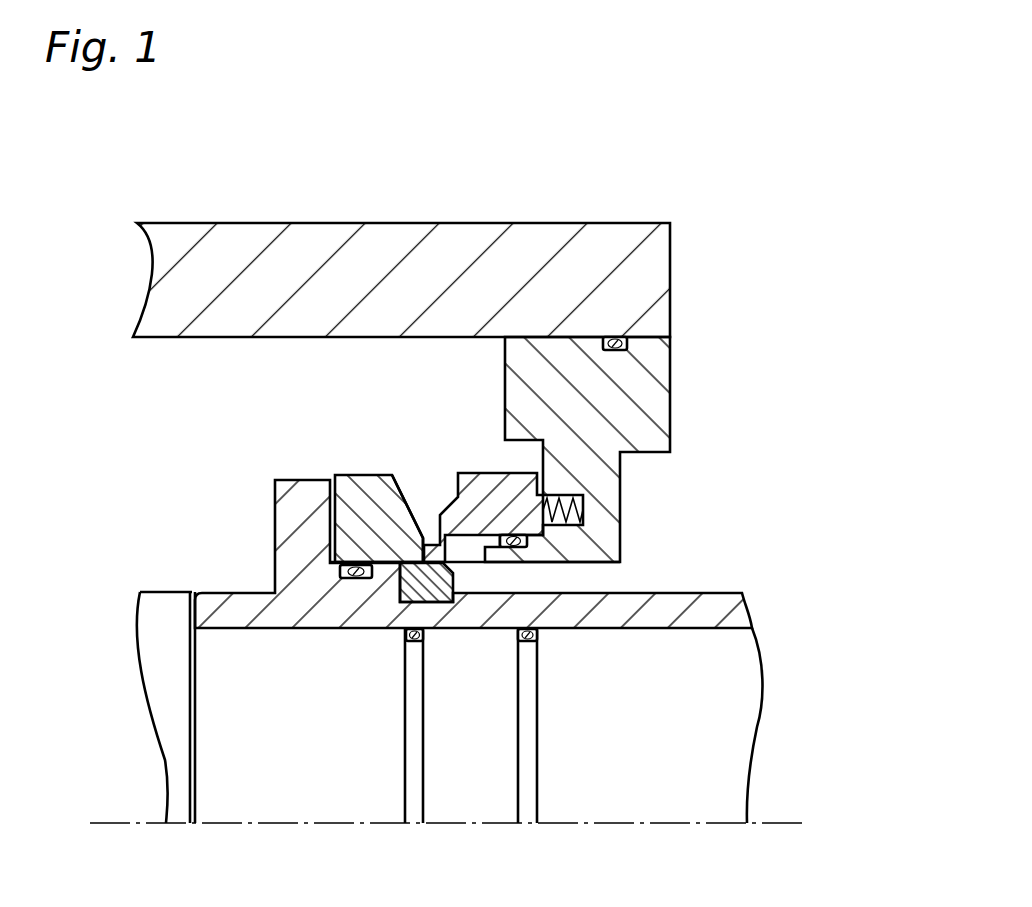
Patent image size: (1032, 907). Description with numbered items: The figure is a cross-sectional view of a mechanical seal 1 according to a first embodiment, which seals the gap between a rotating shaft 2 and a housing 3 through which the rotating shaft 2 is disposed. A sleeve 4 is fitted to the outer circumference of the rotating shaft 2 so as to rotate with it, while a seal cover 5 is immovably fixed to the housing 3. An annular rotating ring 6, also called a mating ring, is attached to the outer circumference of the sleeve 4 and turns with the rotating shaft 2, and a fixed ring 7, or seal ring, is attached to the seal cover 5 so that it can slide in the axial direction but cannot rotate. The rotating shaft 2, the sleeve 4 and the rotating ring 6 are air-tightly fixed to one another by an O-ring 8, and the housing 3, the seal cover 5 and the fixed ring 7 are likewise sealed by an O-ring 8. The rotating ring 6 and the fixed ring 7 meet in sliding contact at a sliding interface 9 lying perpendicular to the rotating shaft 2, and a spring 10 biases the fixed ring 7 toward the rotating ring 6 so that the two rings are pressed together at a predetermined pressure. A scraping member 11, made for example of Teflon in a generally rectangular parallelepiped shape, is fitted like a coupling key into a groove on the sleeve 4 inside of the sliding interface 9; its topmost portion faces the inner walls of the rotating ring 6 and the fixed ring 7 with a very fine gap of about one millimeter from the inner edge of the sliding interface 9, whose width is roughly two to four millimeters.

The mechanical seal 1 is at (823, 403).
The rotating shaft 2 is at (748, 733).
The housing 3 is at (302, 228).
The sleeve 4 is at (745, 604).
The seal cover 5 is at (672, 400).
The rotating ring 6 is at (343, 474).
The fixed ring 7 is at (487, 474).
The O-ring 8 is at (615, 335).
The sliding interface 9 is at (424, 536).
The spring 10 is at (600, 521).
The scraping member 11 is at (455, 590).